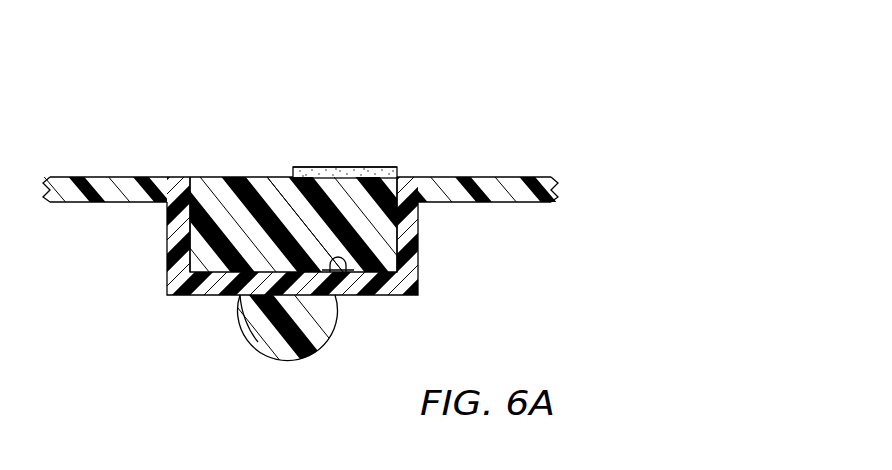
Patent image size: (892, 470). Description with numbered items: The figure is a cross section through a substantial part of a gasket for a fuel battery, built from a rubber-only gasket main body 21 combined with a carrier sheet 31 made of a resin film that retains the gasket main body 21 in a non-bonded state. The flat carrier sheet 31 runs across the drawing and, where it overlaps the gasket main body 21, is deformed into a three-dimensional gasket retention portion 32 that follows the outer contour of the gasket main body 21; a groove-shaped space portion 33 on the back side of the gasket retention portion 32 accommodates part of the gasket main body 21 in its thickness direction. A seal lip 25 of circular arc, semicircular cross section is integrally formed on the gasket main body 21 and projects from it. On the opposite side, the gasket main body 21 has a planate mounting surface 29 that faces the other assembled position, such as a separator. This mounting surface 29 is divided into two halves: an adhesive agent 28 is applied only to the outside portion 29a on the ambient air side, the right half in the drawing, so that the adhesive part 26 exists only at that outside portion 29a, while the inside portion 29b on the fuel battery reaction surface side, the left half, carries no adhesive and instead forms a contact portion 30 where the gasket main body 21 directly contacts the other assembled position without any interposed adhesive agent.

The gasket main body 21 is at (208, 177).
The seal lip 25 is at (272, 330).
The adhesive part 26 is at (331, 156).
The adhesive agent 28 is at (310, 167).
The mounting surface 29 is at (283, 177).
The outside portion 29a is at (375, 177).
The inside portion 29b is at (222, 177).
The contact portion 30 is at (258, 177).
The carrier sheet 31 is at (493, 193).
The gasket retention portion 32 is at (244, 297).
The space portion 33 is at (335, 272).